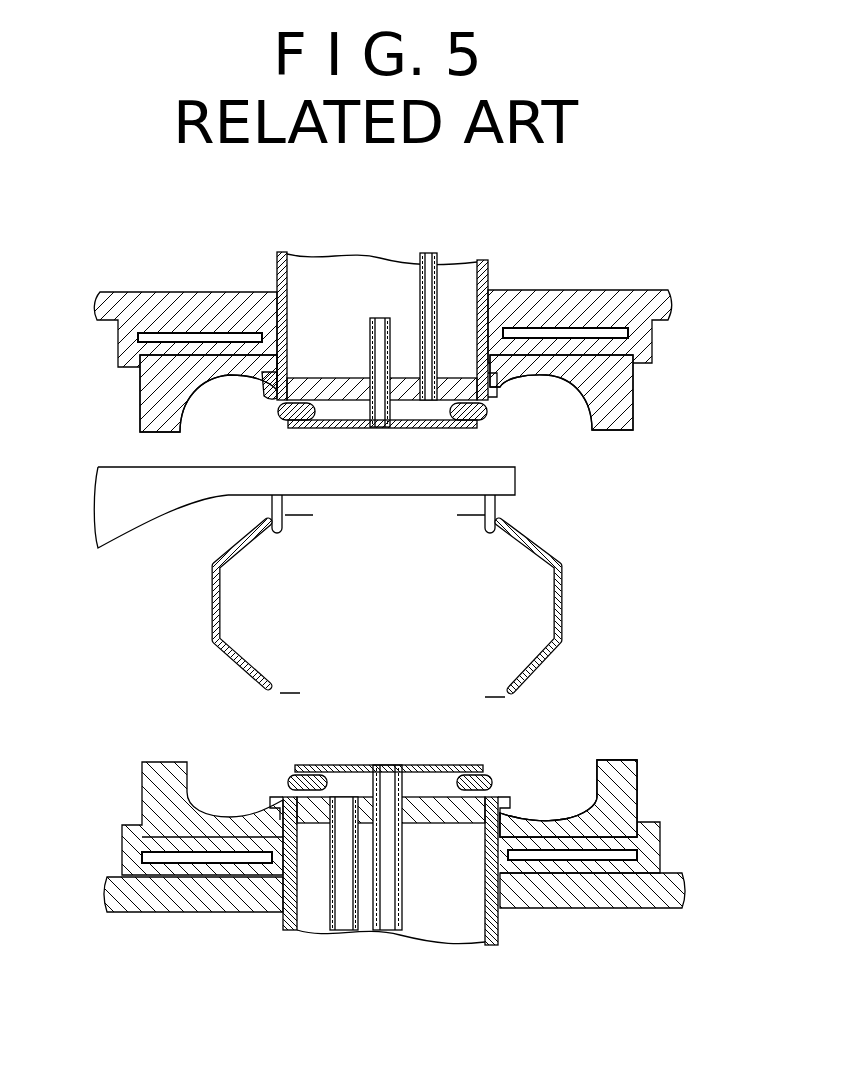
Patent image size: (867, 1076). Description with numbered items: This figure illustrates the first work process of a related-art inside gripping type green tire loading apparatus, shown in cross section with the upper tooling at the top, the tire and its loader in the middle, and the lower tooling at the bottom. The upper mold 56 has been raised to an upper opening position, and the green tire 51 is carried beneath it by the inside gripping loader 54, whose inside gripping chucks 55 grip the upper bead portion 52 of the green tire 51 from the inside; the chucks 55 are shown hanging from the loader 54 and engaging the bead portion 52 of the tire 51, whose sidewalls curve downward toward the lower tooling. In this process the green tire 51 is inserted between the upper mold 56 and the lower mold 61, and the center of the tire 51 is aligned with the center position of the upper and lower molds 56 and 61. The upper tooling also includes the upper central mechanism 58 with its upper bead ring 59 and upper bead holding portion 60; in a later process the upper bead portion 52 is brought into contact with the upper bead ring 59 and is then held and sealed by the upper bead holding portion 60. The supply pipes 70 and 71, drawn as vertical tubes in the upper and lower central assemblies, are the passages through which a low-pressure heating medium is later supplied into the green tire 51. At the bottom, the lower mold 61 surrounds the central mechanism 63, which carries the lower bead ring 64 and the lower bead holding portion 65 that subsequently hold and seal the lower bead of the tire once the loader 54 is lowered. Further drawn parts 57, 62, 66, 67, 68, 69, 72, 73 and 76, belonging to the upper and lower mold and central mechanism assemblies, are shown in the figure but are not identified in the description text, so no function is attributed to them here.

The green tire 51 is at (563, 593).
The upper bead portion 52 is at (513, 522).
The inside gripping loader 54 is at (143, 527).
The inside gripping chucks 55 is at (283, 530).
The upper mold 56 is at (140, 405).
The upper plate 57 is at (180, 323).
The upper central mechanism 58 is at (490, 272).
The upper bead ring 59 is at (268, 387).
The upper bead holding portion 60 is at (403, 336).
The lower mold 61 is at (160, 760).
The lower base plate 62 is at (578, 868).
The central mechanism 63 is at (257, 887).
The lower bead ring 64 is at (507, 807).
The lower bead holding portion 65 is at (355, 845).
The upper housing 66 is at (328, 385).
The lower housing 67 is at (437, 823).
The seal ring 68 is at (275, 413).
The seal ring 69 is at (273, 782).
The supply pipe 70 is at (417, 287).
The supply pipe 71 is at (327, 897).
The tube 72 is at (400, 893).
The cover plate 73 is at (402, 420).
The cover plate 76 is at (417, 763).